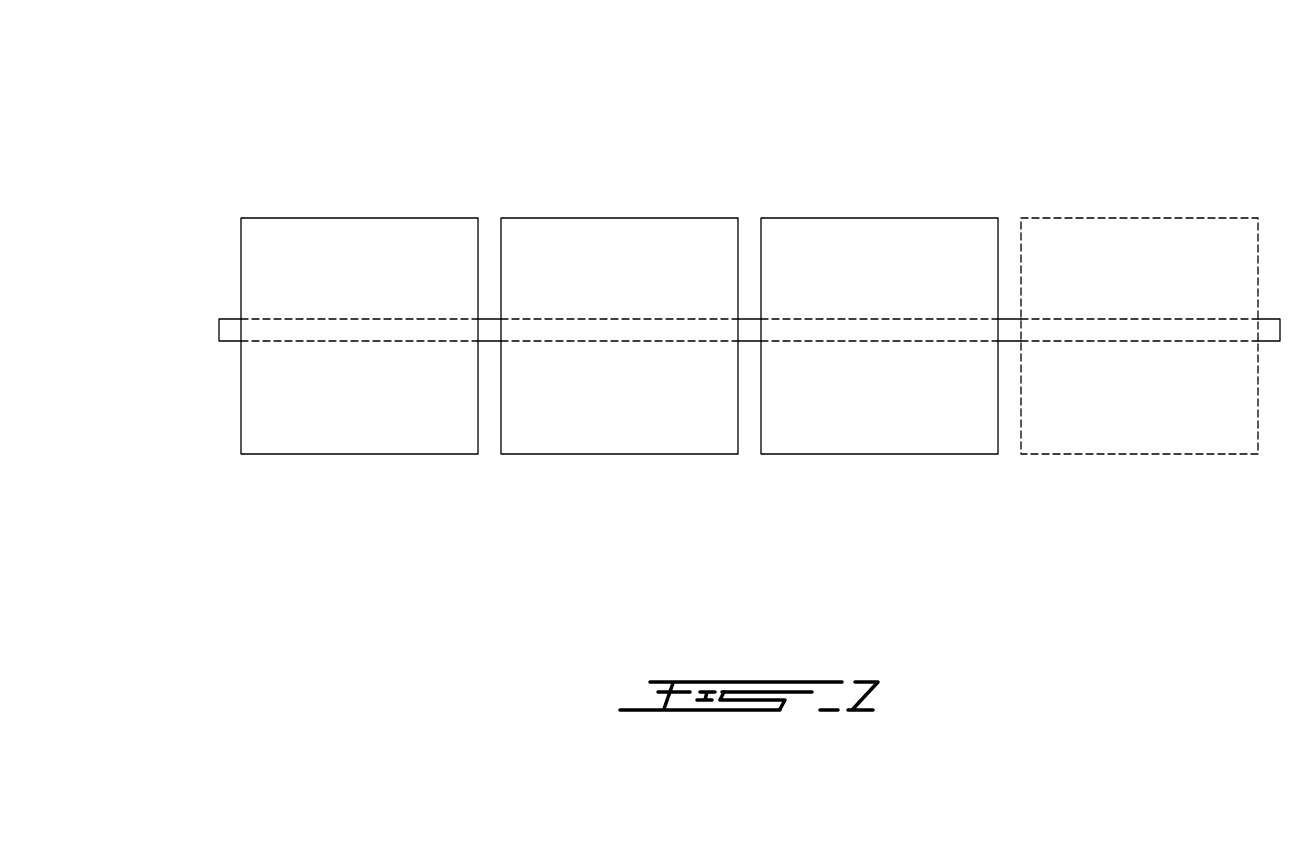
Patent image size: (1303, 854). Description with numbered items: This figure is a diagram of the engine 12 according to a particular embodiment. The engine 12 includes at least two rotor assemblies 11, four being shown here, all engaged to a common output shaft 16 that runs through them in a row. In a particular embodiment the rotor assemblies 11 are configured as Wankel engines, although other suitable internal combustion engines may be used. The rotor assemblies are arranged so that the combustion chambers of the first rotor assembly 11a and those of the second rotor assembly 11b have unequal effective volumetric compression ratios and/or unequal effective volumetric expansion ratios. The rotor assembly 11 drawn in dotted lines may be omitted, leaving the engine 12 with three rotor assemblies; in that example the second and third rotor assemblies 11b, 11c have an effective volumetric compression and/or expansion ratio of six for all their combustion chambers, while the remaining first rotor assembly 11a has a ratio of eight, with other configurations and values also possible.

The engine 12 is at (741, 168).
The rotor assembly 11 is at (952, 240).
The first rotor assembly 11a is at (692, 425).
The second rotor assembly 11b is at (952, 425).
The rotor assembly 11c is at (432, 425).
The output shaft 16 is at (228, 328).